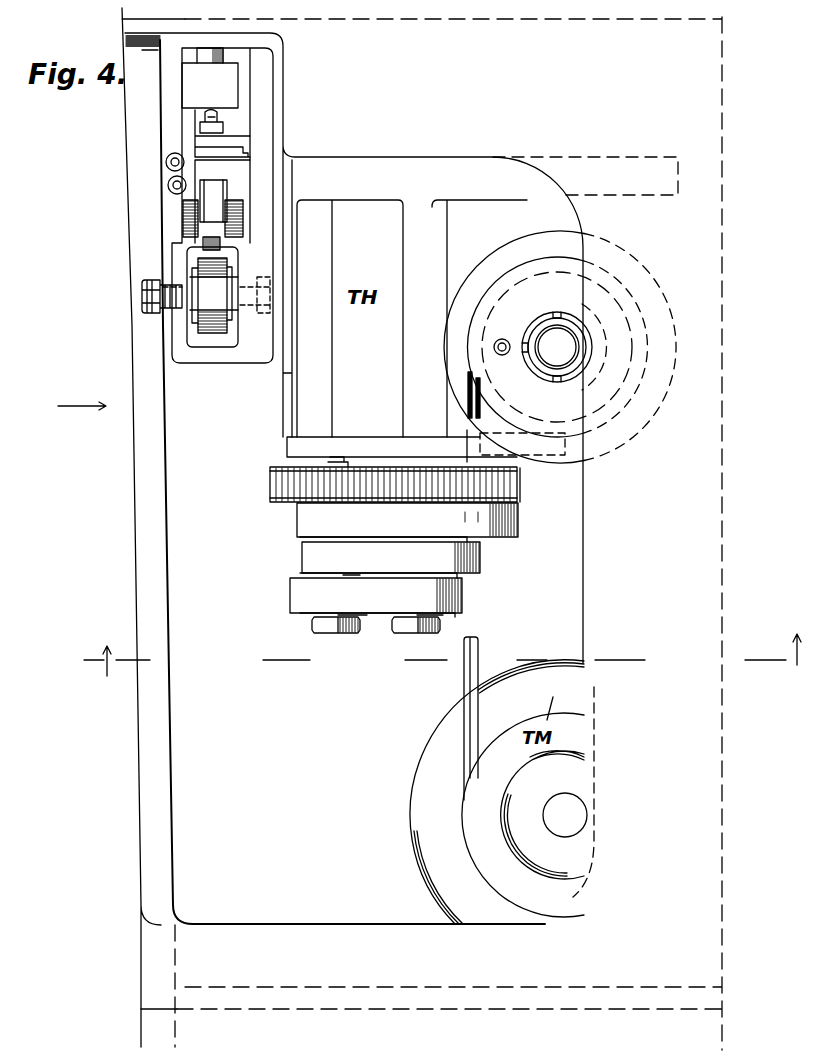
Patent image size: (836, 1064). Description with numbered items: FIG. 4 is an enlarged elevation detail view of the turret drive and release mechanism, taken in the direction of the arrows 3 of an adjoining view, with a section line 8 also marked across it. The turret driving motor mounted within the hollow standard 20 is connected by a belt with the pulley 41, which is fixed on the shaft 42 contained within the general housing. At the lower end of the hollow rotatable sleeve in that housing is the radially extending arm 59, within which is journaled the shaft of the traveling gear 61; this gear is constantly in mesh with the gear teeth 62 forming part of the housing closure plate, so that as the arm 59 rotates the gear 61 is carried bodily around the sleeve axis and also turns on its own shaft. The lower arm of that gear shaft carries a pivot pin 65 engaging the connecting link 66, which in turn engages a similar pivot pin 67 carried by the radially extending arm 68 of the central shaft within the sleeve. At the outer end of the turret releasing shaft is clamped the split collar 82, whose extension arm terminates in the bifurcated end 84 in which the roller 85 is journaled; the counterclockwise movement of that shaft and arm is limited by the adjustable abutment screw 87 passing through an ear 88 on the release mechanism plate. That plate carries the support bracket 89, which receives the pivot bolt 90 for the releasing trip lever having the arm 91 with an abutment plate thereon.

The split collar 82 is at (195, 83).
The adjustable abutment screw 87 is at (228, 118).
The ear 88 is at (200, 137).
The bifurcated end 84 is at (188, 200).
The roller 85 is at (217, 193).
The arm 91 is at (210, 248).
The pivot bolt 90 is at (182, 302).
The support bracket 89 is at (234, 347).
The pulley 41 is at (512, 278).
The shaft 42 is at (552, 335).
The traveling gear 61 is at (272, 485).
The gear teeth 62 is at (520, 481).
The radially extending arm 59 is at (519, 518).
The radially extending arm 68 is at (483, 556).
The connecting link 66 is at (465, 591).
The pivot pin 65 is at (330, 633).
The pivot pin 67 is at (414, 633).
The hollow standard 20 is at (482, 648).
The section line 8- 8 is at (435, 664).
The view direction 3 is at (77, 397).